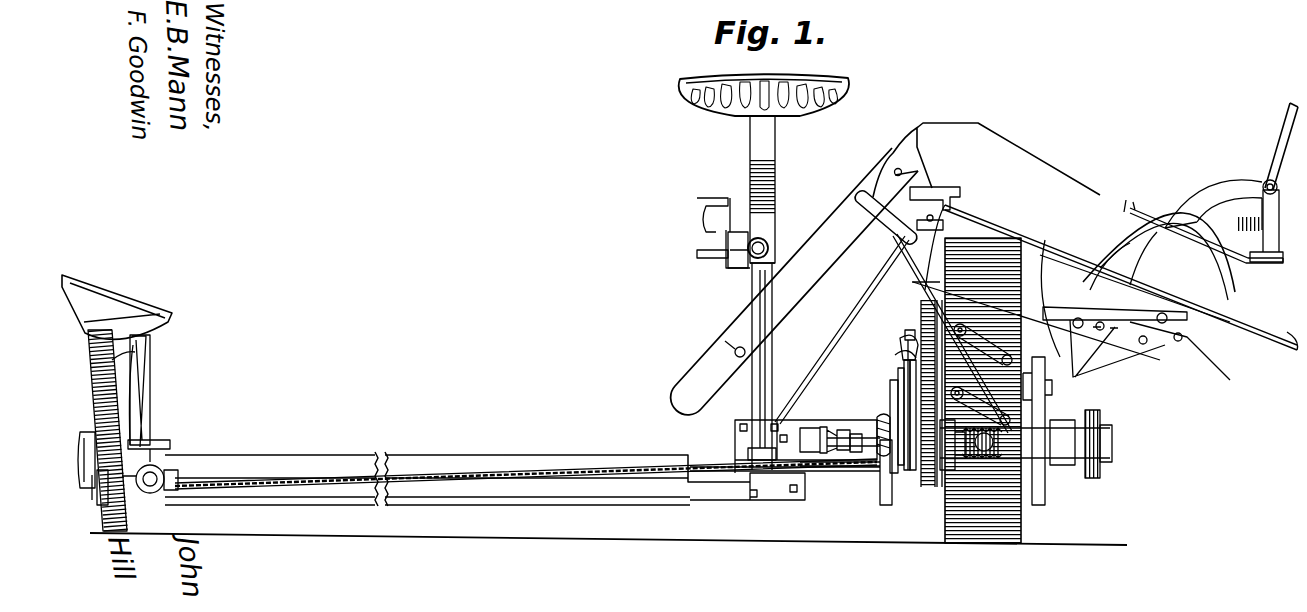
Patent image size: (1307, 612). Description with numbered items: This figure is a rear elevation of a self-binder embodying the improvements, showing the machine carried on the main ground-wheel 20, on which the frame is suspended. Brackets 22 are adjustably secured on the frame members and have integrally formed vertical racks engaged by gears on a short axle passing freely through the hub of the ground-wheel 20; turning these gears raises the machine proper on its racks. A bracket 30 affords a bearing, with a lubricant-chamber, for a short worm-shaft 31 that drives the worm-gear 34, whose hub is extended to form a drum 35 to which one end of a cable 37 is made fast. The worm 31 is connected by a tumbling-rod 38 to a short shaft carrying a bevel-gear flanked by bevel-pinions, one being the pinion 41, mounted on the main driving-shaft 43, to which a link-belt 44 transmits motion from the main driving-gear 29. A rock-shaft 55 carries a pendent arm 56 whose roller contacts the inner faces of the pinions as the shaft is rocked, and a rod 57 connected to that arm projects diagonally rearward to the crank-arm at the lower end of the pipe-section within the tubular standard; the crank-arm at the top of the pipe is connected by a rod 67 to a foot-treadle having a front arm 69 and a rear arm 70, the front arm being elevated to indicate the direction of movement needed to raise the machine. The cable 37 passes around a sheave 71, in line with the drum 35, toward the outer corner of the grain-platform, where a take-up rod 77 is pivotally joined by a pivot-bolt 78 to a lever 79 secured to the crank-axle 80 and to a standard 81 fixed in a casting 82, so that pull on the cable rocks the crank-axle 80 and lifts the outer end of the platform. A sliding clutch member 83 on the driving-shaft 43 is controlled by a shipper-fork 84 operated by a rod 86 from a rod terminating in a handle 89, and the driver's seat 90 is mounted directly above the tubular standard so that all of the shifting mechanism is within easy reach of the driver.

The ground-wheel 20 is at (981, 374).
The brackets 22 is at (1047, 391).
The main driving-gear 29 is at (940, 385).
The bracket 30 is at (904, 330).
The worm-shaft 31 is at (900, 348).
The worm-gear 34 is at (904, 395).
The drum 35 is at (896, 360).
The cable 37 is at (898, 407).
The tumbling-rod 38 is at (910, 378).
The bevel-pinion 41 is at (882, 431).
The driving-shaft 43 is at (1028, 445).
The link-belt 44 is at (926, 487).
The rock-shaft 55 is at (877, 420).
The pendent arm 56 is at (896, 473).
The rod 57 is at (816, 458).
The rod 67 is at (728, 268).
The treadle arm 69 is at (722, 198).
The treadle arm 70 is at (700, 258).
The sheave 71 is at (882, 498).
The rod 77 is at (153, 410).
The pivot-bolt 78 is at (148, 338).
The lever 79 is at (150, 382).
The crank-axle 80 is at (90, 445).
The standard 81 is at (130, 372).
The casting 82 is at (104, 492).
The sliding clutch member 83 is at (988, 447).
The shipper-fork 84 is at (962, 445).
The rod 86 is at (864, 467).
The handle 89 is at (770, 240).
The driver's seat 90 is at (820, 110).